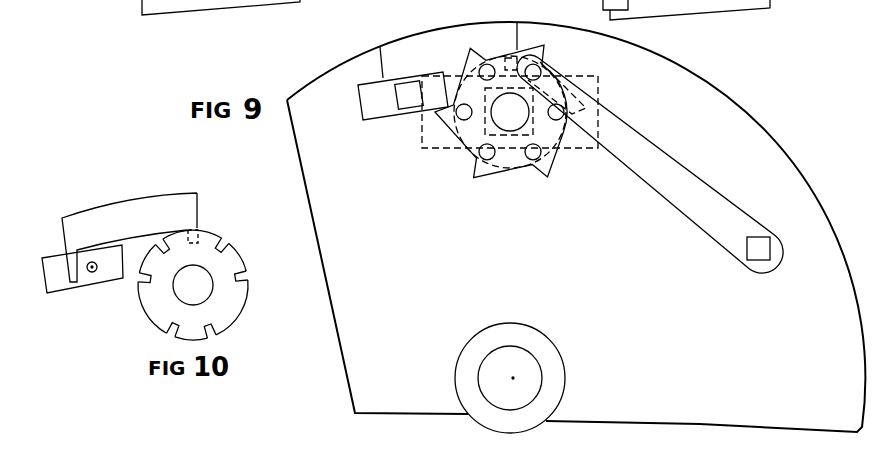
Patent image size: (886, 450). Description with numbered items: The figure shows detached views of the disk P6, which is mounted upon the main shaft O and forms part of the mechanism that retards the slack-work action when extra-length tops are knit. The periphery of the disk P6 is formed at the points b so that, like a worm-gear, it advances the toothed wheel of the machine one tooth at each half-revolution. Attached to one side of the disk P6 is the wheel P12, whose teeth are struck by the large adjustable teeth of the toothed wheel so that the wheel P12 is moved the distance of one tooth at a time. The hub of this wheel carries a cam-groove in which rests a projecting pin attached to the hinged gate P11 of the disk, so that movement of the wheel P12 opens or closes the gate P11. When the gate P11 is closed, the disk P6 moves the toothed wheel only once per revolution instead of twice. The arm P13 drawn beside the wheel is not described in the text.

In FIG. 9, the disk P6 is at (576, 227).
In FIG. 9, the hinged gate P11 is at (406, 82).
In FIG. 10, the hinged gate P11 is at (119, 243).
In FIG. 9, the wheel P12 is at (510, 115).
In FIG. 9, the lever arm P13 is at (650, 164).
In FIG. 9, the point of the periphery b is at (524, 19).
In FIG. 9, the main shaft o is at (506, 379).